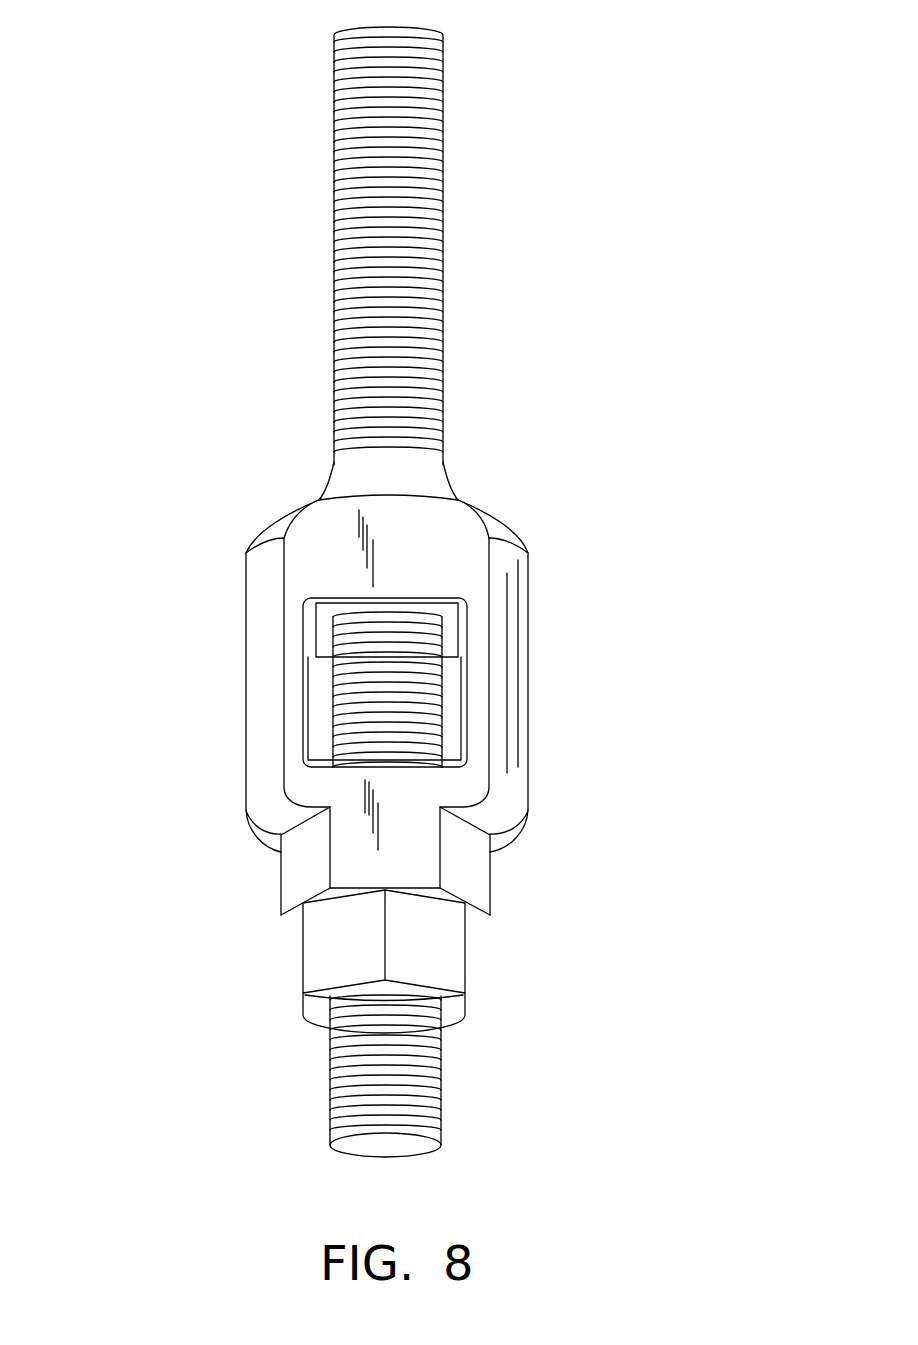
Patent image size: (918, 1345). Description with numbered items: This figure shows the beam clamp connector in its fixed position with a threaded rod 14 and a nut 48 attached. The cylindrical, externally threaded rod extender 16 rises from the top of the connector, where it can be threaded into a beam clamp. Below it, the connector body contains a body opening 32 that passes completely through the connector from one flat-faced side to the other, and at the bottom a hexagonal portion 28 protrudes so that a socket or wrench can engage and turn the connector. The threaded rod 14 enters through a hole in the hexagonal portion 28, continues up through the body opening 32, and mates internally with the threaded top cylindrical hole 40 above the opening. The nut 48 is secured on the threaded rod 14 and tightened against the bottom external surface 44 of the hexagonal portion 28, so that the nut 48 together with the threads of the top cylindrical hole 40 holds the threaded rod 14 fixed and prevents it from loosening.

The threaded rod 14 is at (442, 1098).
The threaded rod extender 16 is at (443, 335).
The hexagonal portion 28 is at (303, 865).
The body opening 32 is at (452, 703).
The top cylindrical hole 40 is at (332, 637).
The bottom external surface 44 is at (476, 920).
The nut 48 is at (466, 983).